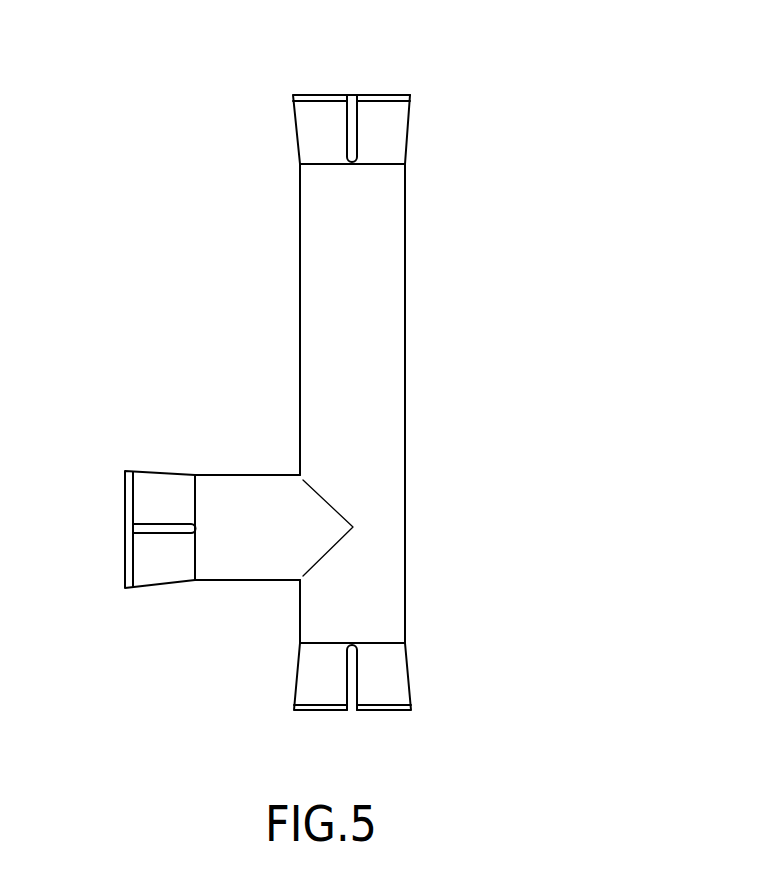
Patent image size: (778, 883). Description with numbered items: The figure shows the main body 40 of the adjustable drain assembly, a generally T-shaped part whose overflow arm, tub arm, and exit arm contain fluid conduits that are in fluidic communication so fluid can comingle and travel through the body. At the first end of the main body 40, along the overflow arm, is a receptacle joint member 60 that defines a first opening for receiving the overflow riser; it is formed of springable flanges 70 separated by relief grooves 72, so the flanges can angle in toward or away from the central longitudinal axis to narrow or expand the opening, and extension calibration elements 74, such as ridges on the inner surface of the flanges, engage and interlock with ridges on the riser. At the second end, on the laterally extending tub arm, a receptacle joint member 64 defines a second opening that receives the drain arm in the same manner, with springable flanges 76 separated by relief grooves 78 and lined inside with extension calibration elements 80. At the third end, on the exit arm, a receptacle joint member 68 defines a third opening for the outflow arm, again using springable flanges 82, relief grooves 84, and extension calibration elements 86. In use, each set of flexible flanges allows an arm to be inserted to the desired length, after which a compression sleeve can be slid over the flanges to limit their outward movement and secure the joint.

The main body 40 is at (546, 82).
The receptacle joint member 60 is at (262, 106).
The receptacle joint member 64 is at (98, 468).
The receptacle joint member 68 is at (452, 668).
The springable flanges 70 is at (397, 130).
The relief grooves 72 is at (350, 95).
The extension calibration elements 74 is at (322, 80).
The springable flanges 76 is at (148, 482).
The relief grooves 78 is at (130, 528).
The extension calibration elements 80 is at (105, 566).
The springable flanges 82 is at (307, 675).
The relief grooves 84 is at (352, 712).
The extension calibration elements 86 is at (396, 724).